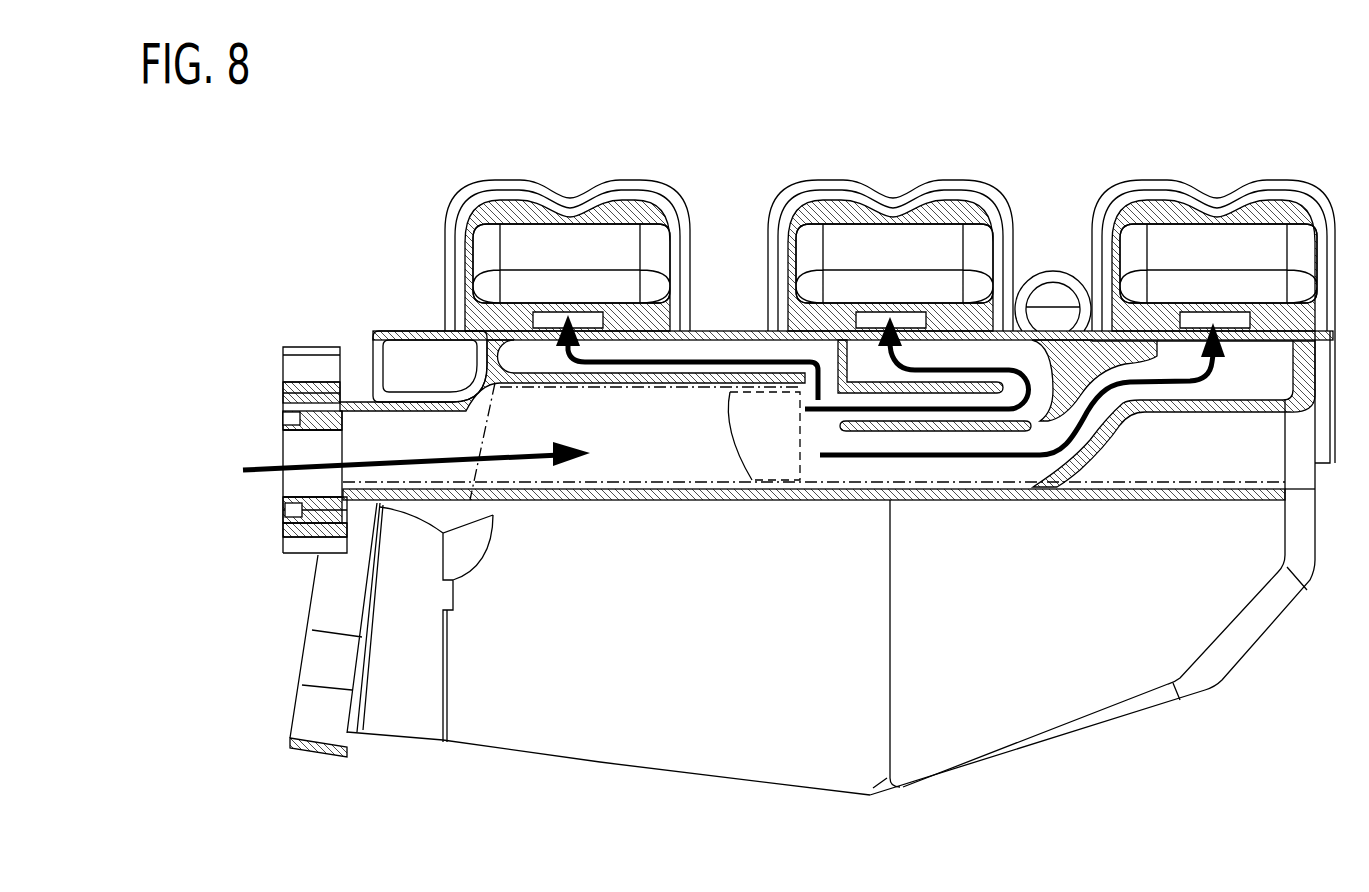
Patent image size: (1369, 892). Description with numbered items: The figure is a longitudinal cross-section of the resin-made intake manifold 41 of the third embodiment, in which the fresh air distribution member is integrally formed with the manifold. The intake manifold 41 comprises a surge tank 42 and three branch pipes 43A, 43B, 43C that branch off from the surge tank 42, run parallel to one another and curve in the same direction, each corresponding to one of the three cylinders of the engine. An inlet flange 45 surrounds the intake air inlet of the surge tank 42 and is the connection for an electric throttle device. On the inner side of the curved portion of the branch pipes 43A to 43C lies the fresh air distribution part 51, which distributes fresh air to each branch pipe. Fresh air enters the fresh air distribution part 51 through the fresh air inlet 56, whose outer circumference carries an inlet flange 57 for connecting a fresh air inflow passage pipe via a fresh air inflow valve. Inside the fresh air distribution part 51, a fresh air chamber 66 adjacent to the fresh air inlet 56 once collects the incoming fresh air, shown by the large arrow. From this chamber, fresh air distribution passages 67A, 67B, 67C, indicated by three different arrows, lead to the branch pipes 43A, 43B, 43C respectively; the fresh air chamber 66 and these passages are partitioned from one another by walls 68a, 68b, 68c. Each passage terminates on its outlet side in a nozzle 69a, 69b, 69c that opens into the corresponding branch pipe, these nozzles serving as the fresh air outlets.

The intake manifold 41 is at (386, 208).
The surge tank 42 is at (582, 760).
The branch pipe 43A is at (592, 190).
The branch pipe 43B is at (927, 188).
The branch pipe 43C is at (1250, 190).
The inlet flange 45 is at (305, 757).
The fresh air distribution part 51 is at (1022, 500).
The fresh air inlet 56 is at (281, 444).
The inlet flange 57 is at (313, 347).
The fresh air chamber 66 is at (667, 500).
The fresh air distribution passage 67A is at (733, 350).
The fresh air distribution passage 67B is at (950, 352).
The fresh air distribution passage 67C is at (1258, 352).
The wall 68a is at (753, 482).
The wall 68b is at (908, 394).
The wall 68c is at (860, 432).
The nozzle 69a is at (556, 315).
The nozzle 69b is at (883, 318).
The nozzle 69c is at (1203, 318).